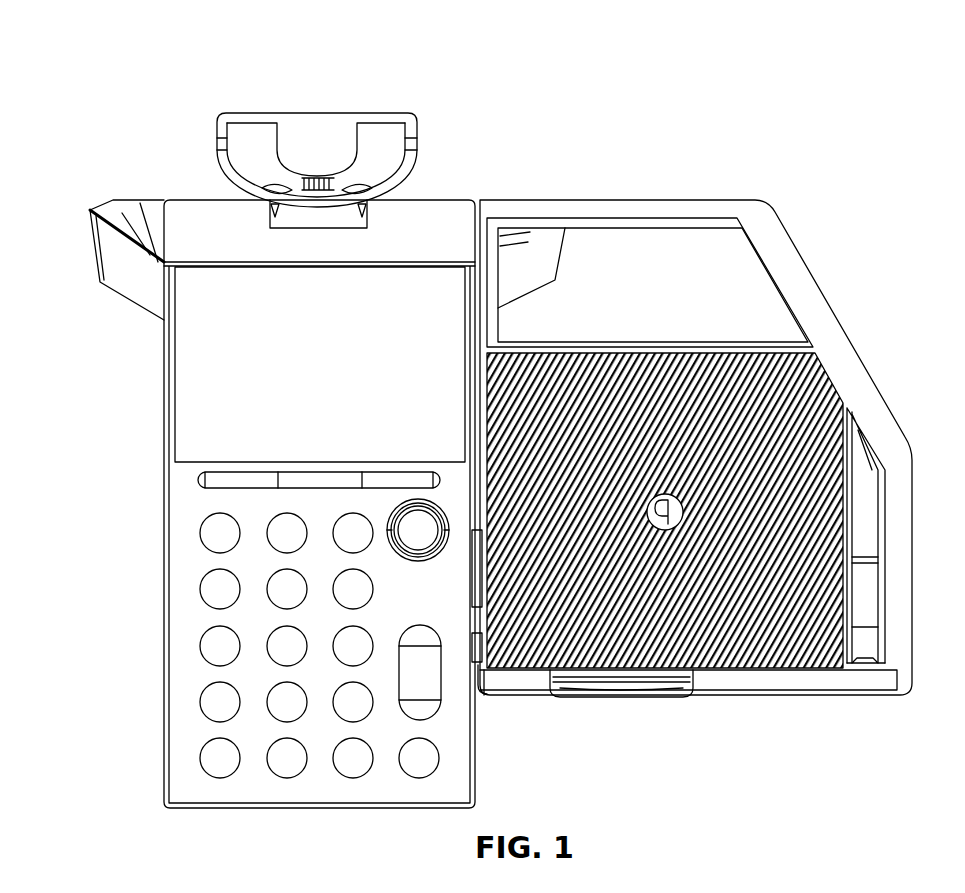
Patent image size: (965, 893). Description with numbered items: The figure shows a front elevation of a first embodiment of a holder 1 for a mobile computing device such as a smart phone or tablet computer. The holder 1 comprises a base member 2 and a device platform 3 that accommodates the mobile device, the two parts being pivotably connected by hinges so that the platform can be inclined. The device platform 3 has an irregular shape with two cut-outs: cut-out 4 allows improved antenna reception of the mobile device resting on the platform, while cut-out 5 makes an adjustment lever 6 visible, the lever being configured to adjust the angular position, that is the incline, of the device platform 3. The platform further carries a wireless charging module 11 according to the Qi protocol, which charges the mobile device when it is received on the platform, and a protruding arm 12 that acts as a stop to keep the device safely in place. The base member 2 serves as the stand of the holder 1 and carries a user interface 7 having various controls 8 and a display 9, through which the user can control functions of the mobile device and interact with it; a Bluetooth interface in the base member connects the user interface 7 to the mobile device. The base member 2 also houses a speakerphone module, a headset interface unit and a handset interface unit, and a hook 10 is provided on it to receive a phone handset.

The holder 1 is at (714, 78).
The base member 2 is at (137, 228).
The device platform 3 is at (810, 390).
The cut-out 4 is at (663, 250).
The cut-out 5 is at (873, 648).
The adjustment lever 6 is at (873, 538).
The user interface 7 is at (192, 582).
The controls 8 is at (212, 752).
The display 9 is at (183, 372).
The hook 10 is at (258, 135).
The wireless charging module 11 is at (683, 512).
The protruding arm 12 is at (842, 682).